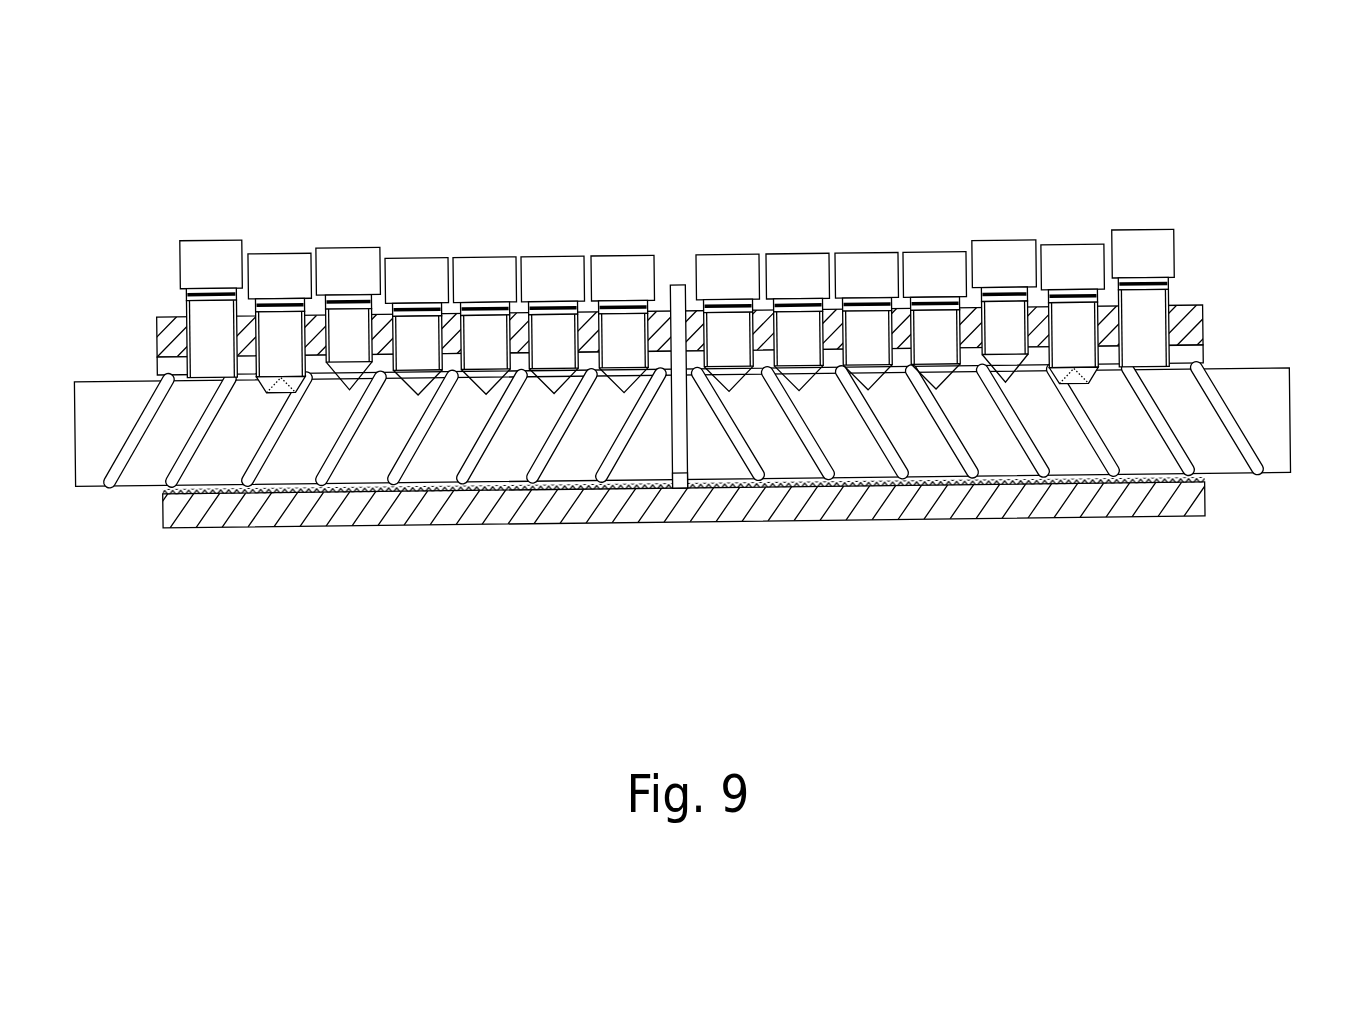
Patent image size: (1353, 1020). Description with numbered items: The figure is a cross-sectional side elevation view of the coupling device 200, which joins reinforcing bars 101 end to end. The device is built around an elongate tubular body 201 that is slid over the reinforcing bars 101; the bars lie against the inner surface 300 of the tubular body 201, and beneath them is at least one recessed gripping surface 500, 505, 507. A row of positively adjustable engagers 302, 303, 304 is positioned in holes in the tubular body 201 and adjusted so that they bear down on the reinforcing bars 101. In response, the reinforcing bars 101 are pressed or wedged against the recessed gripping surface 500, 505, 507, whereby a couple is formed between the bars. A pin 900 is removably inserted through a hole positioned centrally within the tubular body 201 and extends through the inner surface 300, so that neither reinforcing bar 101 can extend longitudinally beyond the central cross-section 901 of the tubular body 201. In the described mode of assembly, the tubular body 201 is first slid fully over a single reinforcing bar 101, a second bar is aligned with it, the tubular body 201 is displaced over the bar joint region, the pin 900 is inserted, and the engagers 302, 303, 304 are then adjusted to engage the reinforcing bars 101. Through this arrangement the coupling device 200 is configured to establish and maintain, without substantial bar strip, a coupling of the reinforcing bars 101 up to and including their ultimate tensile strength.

The coupling device 200 is at (682, 142).
The reinforcing bar 101 is at (92, 384).
The tubular body 201 is at (711, 434).
The inner surface 300 is at (1203, 361).
The engager 302 is at (205, 248).
The engager 303 is at (282, 262).
The engager 304 is at (348, 258).
The pin 900 is at (685, 405).
The central cross-section 901 is at (681, 490).
The recessed gripping surface 500 is at (684, 540).
The recessed gripping surface 505 is at (684, 540).
The recessed gripping surface 507 is at (198, 524).